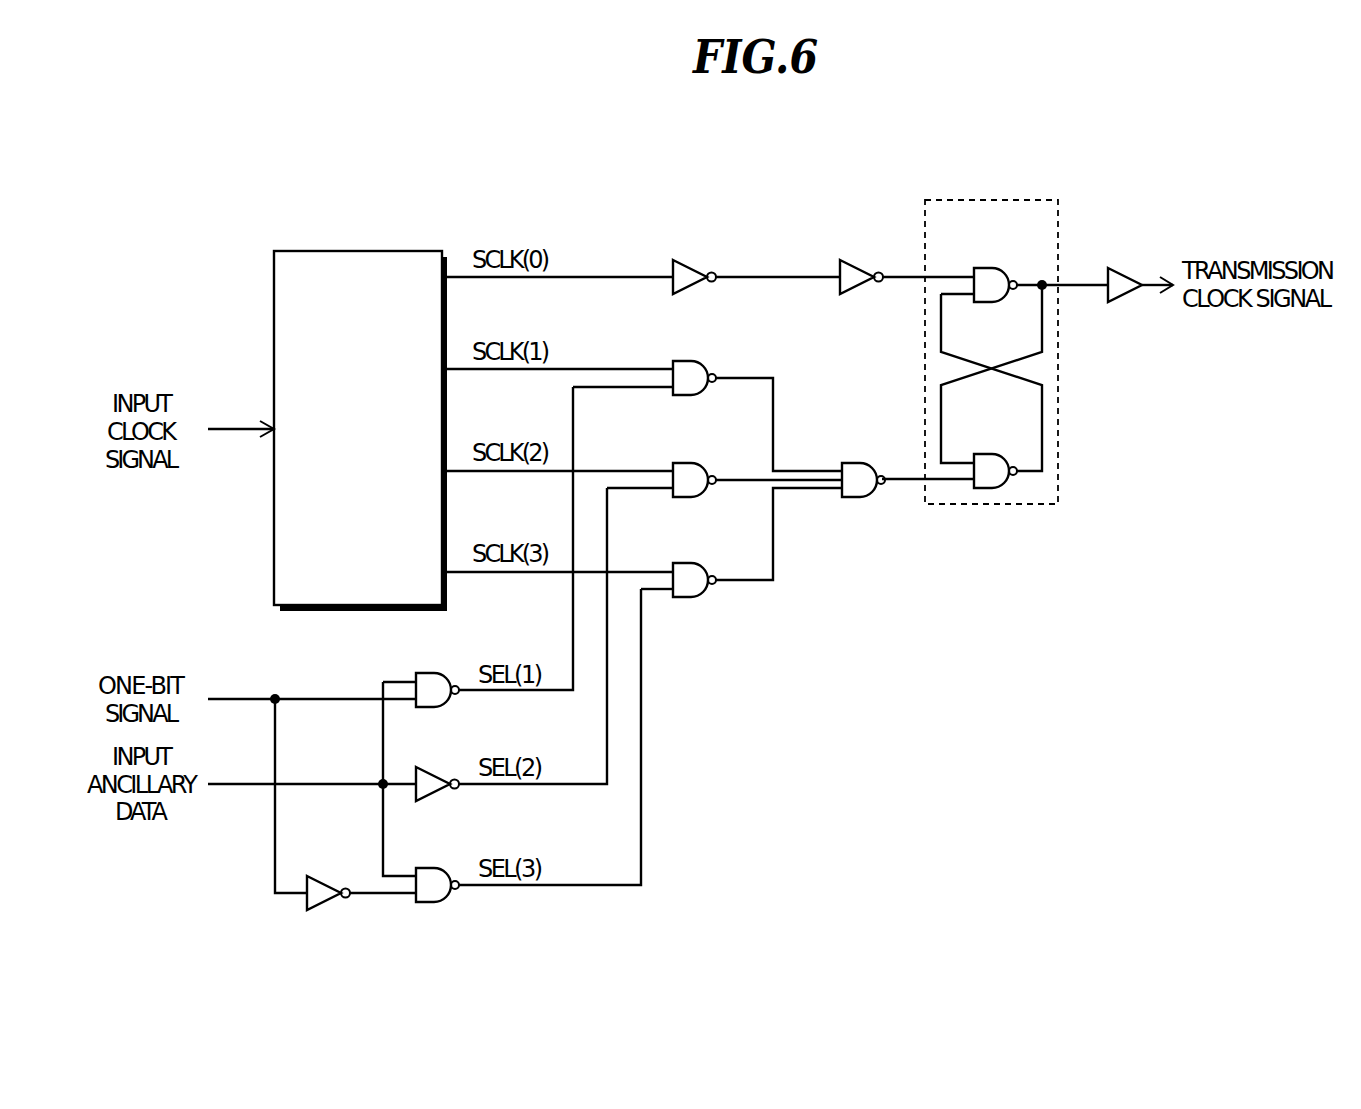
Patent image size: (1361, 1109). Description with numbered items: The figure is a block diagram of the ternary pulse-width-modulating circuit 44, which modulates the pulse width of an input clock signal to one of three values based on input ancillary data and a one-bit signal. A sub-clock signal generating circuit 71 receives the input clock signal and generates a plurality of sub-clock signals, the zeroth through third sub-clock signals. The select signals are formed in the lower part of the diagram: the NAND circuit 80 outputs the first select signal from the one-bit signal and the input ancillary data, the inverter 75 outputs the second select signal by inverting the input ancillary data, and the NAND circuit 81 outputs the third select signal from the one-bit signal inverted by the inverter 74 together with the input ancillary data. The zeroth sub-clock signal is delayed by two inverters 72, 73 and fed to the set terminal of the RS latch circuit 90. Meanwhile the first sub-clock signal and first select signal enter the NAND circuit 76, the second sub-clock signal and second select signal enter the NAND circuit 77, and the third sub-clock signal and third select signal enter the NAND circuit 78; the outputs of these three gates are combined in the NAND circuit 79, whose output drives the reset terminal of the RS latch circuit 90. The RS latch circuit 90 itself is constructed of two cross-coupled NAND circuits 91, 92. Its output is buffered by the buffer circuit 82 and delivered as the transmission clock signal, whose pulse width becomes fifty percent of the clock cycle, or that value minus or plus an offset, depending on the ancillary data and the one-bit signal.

The ternary pulse-width-modulating circuit 44 is at (775, 156).
The sub-clock signal generating circuit 71 is at (426, 249).
The inverter 72 is at (692, 261).
The inverter 73 is at (859, 261).
The inverter 74 is at (327, 876).
The inverter 75 is at (435, 767).
The NAND circuit 76 is at (693, 359).
The NAND circuit 77 is at (693, 460).
The NAND circuit 78 is at (693, 562).
The NAND circuit 79 is at (860, 462).
The NAND circuit 80 is at (436, 672).
The NAND circuit 81 is at (436, 867).
The buffer circuit 82 is at (1127, 267).
The RS latch circuit 90 is at (1043, 197).
The NAND circuit 91 is at (991, 267).
The NAND circuit 92 is at (991, 453).